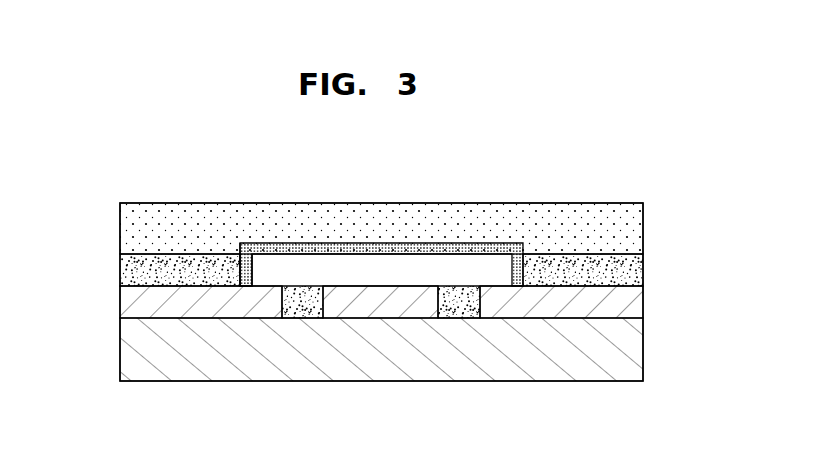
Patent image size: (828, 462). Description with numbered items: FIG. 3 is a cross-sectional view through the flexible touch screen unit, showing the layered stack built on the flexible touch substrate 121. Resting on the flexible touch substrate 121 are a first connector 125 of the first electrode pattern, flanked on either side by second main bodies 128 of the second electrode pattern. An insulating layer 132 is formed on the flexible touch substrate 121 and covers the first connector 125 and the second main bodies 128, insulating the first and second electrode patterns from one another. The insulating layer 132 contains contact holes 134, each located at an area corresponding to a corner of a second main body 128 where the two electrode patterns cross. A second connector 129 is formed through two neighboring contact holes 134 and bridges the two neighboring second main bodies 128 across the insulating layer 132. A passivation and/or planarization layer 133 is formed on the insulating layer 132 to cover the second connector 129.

The flexible touch substrate 121 is at (643, 348).
The first connector 125 is at (382, 306).
The second main body 128 is at (219, 305).
The second connector 129 is at (377, 252).
The insulating layer 132 is at (643, 266).
The passivation and/or planarization layer 133 is at (643, 230).
The contact hole 134 is at (240, 251).